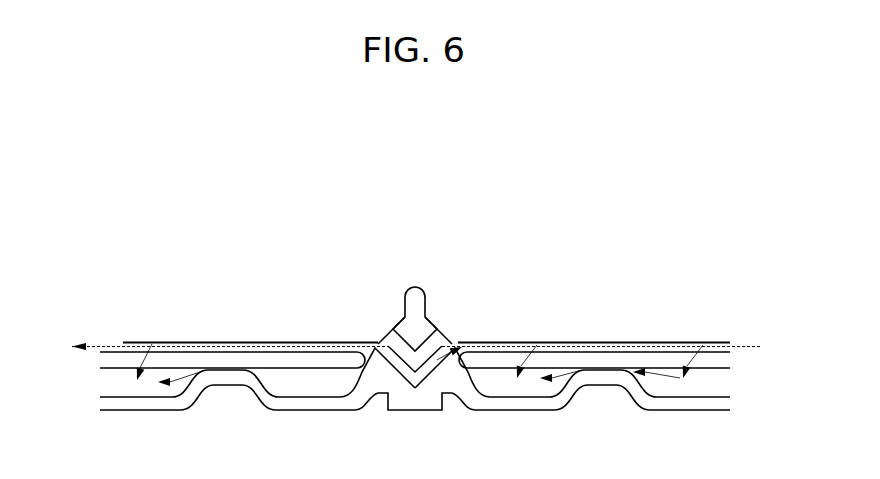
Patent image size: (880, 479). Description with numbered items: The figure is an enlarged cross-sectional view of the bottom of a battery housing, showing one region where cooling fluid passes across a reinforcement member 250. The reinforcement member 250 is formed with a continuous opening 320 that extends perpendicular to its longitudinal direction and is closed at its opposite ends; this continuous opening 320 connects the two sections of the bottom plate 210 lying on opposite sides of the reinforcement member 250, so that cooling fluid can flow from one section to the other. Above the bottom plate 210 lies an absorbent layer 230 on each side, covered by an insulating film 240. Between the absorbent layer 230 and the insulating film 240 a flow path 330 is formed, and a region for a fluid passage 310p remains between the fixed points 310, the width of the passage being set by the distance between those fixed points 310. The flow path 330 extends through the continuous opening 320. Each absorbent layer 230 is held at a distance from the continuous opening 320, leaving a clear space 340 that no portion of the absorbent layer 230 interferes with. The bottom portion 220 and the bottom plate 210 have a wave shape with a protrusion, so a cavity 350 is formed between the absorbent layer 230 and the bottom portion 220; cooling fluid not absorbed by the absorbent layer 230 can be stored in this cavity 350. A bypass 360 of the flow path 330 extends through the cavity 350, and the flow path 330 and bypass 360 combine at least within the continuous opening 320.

The bottom plate 210 is at (555, 402).
The bottom portion 220 is at (100, 396).
The absorbent layer 230 is at (703, 368).
The insulating film 240 is at (181, 341).
The reinforcement member 250 is at (418, 330).
The fixed points 310 is at (296, 341).
The fluid passage 310p is at (271, 290).
The continuous opening 320 is at (369, 333).
The flow path 330 is at (653, 341).
The clear space 340 is at (393, 358).
The cavity 350 is at (118, 382).
The bypass 360 is at (300, 382).